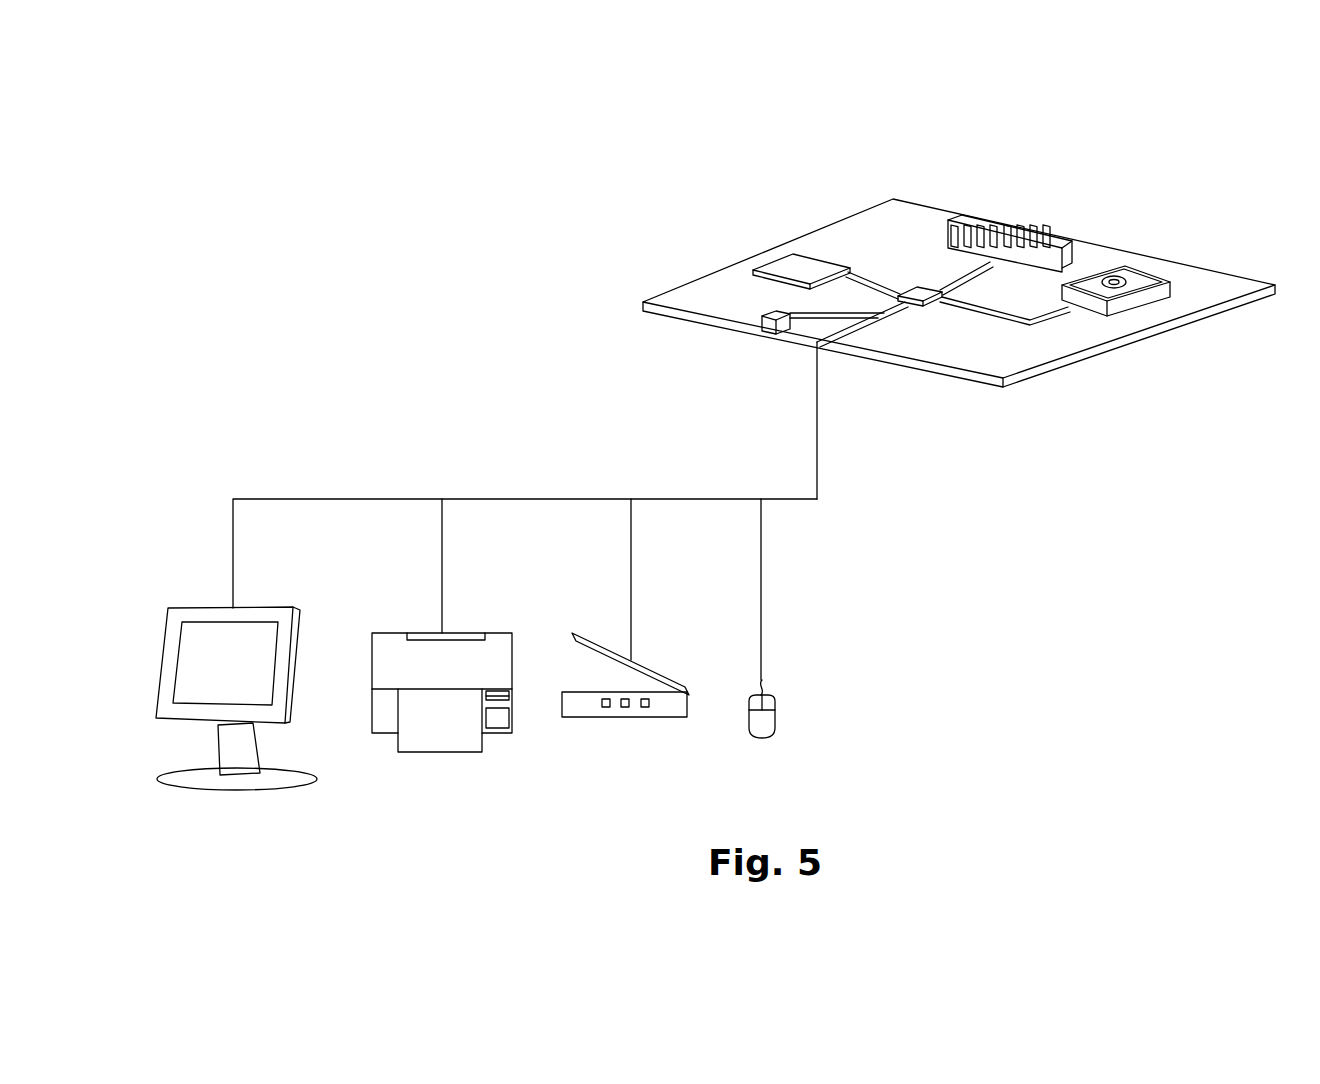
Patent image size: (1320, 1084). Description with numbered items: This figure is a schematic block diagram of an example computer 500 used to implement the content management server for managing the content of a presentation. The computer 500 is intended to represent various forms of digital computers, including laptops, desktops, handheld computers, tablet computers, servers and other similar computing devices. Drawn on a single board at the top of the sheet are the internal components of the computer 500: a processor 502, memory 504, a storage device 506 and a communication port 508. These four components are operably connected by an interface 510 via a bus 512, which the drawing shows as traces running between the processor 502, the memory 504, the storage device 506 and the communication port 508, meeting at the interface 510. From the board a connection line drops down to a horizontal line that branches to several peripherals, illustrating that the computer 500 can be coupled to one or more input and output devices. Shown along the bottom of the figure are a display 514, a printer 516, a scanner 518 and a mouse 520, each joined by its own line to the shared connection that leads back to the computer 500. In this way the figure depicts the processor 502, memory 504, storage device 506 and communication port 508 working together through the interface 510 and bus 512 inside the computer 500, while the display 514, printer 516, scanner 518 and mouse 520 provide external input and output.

The computer 500 is at (1102, 141).
The processor 502 is at (783, 268).
The memory 504 is at (997, 218).
The storage device 506 is at (1170, 298).
The communication port 508 is at (771, 326).
The interface 510 is at (923, 306).
The bus 512 is at (1100, 312).
The display 514 is at (268, 789).
The printer 516 is at (440, 752).
The scanner 518 is at (663, 718).
The mouse 520 is at (777, 712).